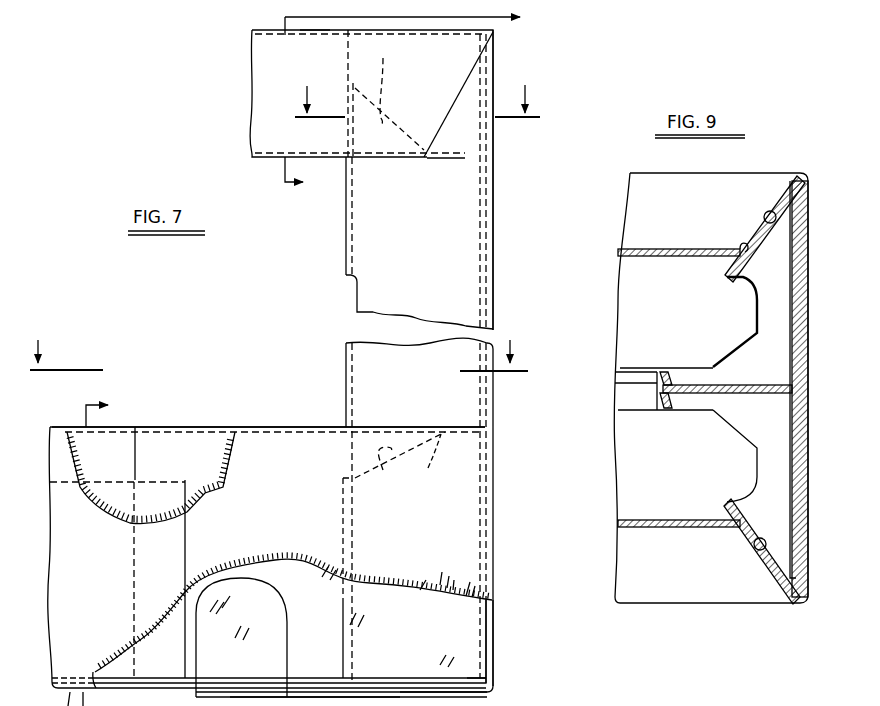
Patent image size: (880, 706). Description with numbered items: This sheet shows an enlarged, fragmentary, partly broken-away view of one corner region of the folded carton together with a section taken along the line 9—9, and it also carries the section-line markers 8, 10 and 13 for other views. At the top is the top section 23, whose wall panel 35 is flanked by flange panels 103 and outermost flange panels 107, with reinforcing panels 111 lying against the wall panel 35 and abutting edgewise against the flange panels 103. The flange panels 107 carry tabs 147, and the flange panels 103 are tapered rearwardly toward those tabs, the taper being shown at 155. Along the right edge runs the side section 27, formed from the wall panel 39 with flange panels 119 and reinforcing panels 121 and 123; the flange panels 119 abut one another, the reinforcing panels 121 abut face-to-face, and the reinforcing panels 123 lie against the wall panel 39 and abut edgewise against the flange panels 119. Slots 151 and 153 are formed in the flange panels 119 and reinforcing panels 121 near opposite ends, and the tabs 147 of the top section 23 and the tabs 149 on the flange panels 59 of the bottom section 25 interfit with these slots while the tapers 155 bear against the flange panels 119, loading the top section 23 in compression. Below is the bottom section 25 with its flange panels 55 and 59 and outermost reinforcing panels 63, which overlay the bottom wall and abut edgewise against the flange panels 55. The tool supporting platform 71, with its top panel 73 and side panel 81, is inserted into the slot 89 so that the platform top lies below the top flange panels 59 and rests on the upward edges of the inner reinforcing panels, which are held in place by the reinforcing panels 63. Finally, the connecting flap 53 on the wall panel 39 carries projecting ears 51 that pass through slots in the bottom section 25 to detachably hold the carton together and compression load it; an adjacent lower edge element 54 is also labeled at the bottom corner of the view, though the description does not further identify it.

In FIG. 7, the top section 23 is at (277, 21).
In FIG. 9, the top section 23 is at (644, 612).
In FIG. 7, the bottom section 25 is at (291, 425).
In FIG. 7, the side section 27 is at (503, 269).
In FIG. 9, the side section 27 is at (811, 555).
In FIG. 7, the wall panel 35 is at (321, 26).
In FIG. 7, the wall panel 39 is at (494, 679).
In FIG. 9, the wall panel 39 is at (807, 220).
In FIG. 7, the projecting ears 51 is at (263, 634).
In FIG. 7, the connecting flap 53 is at (315, 701).
In FIG. 7, the bottom flange 54 is at (495, 694).
In FIG. 7, the flange panels 55 is at (280, 516).
In FIG. 9, the flange panels 55 is at (689, 606).
In FIG. 7, the flange panels 59 is at (170, 427).
In FIG. 7, the reinforcing panels 63 is at (110, 681).
In FIG. 7, the tool supporting platform 71 is at (154, 472).
In FIG. 7, the top panel 73 is at (108, 478).
In FIG. 7, the side panel 81 is at (158, 634).
In FIG. 7, the slot 89 is at (75, 428).
In FIG. 7, the flange panels 103 is at (270, 85).
In FIG. 9, the flange panels 103 is at (656, 250).
In FIG. 9, the flange panels 107 is at (676, 324).
In FIG. 7, the reinforcing panels 111 is at (350, 288).
In FIG. 7, the flange panels 119 is at (366, 243).
In FIG. 9, the flange panels 119 is at (731, 259).
In FIG. 9, the reinforcing panels 121 is at (713, 366).
In FIG. 7, the reinforcing panels 123 is at (480, 660).
In FIG. 9, the reinforcing panels 123 is at (793, 295).
In FIG. 7, the tabs 147 is at (427, 158).
In FIG. 9, the tabs 147 is at (745, 331).
In FIG. 7, the tabs 149 is at (440, 457).
In FIG. 7, the slots 151 is at (389, 98).
In FIG. 7, the slots 153 is at (394, 555).
In FIG. 7, the tapers 155 is at (461, 90).
In FIG. 9, the tapers 155 is at (770, 212).
In FIG. 7, the section line 8- 8 is at (279, 345).
In FIG. 7, the section line 9— 9 is at (417, 95).
In FIG. 7, the section line 10- 10 is at (110, 411).
In FIG. 7, the section line 13- 13 is at (415, 101).